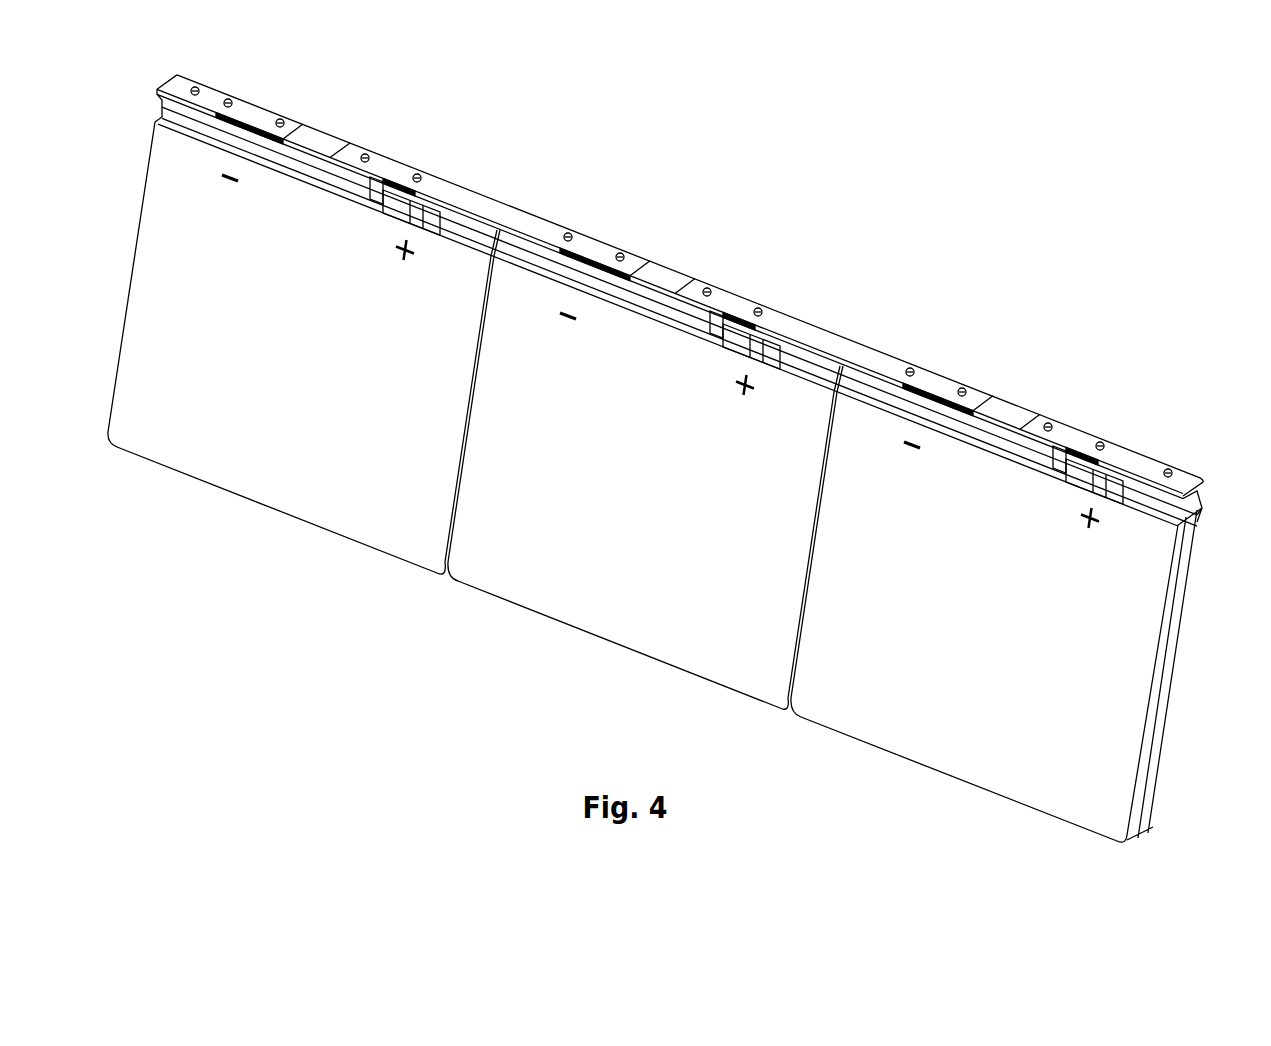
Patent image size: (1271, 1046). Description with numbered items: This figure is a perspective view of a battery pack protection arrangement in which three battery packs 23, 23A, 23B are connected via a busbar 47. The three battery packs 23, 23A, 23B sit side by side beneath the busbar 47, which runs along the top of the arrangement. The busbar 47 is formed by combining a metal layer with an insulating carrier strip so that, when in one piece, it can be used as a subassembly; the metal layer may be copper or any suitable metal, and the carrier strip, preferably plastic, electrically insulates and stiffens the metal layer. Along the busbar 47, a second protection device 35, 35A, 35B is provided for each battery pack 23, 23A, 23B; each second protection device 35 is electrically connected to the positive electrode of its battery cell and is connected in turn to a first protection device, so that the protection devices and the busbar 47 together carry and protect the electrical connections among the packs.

The busbar 47 is at (1128, 454).
The second protection device 35 is at (393, 204).
The second protection device 35A is at (735, 338).
The second protection device 35B is at (1078, 468).
The battery pack 23 is at (292, 480).
The battery pack 23A is at (535, 573).
The battery pack 23B is at (890, 727).